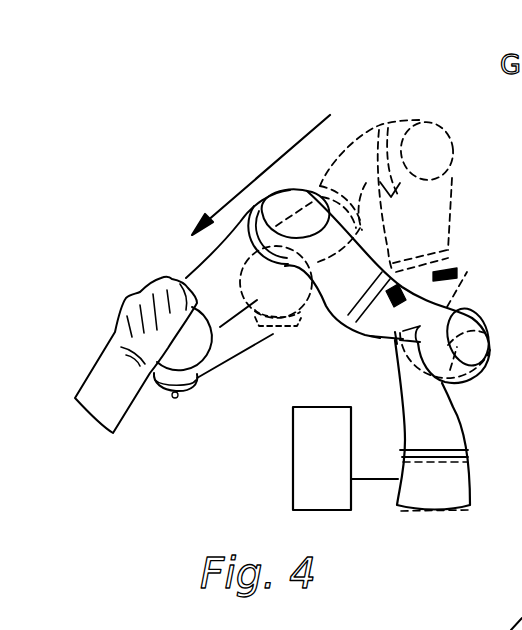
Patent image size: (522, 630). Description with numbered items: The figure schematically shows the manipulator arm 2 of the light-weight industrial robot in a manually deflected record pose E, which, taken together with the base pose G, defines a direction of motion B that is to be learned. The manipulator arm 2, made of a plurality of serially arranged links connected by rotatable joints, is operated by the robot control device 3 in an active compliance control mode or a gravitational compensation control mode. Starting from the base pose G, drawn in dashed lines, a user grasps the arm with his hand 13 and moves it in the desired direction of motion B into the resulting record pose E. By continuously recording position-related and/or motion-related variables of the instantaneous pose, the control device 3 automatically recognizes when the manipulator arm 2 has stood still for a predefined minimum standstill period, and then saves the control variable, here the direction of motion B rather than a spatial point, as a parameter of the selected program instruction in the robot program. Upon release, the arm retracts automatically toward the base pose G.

The manipulator arm 2 is at (399, 102).
The hand 13 is at (149, 285).
The robot control device 3 is at (331, 424).
The base pose G is at (277, 337).
The record pose E is at (173, 400).
The direction of motion B is at (226, 374).